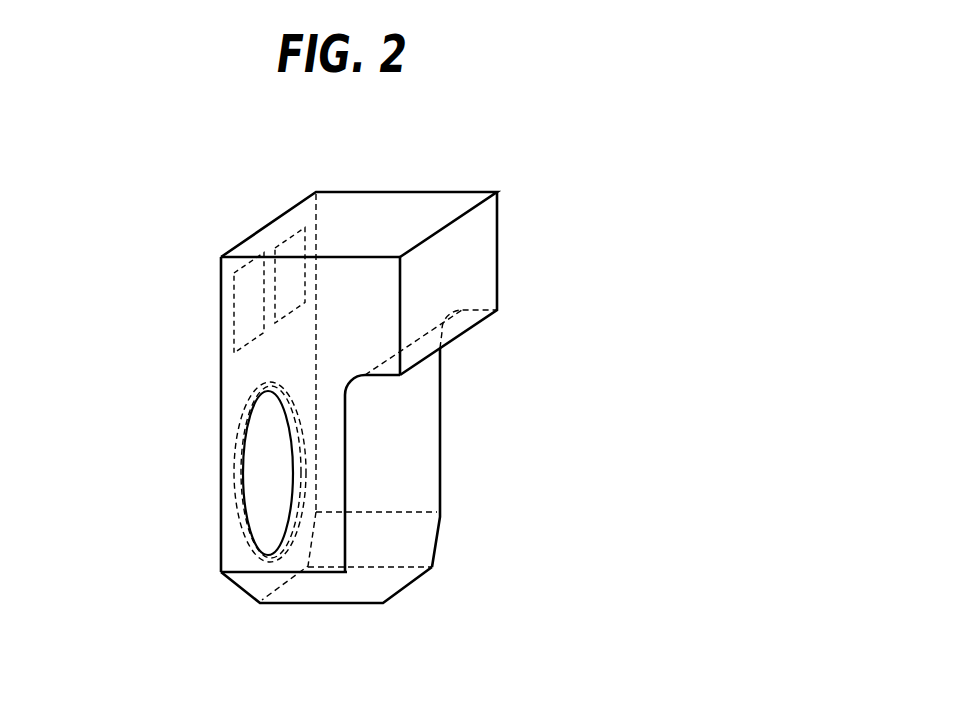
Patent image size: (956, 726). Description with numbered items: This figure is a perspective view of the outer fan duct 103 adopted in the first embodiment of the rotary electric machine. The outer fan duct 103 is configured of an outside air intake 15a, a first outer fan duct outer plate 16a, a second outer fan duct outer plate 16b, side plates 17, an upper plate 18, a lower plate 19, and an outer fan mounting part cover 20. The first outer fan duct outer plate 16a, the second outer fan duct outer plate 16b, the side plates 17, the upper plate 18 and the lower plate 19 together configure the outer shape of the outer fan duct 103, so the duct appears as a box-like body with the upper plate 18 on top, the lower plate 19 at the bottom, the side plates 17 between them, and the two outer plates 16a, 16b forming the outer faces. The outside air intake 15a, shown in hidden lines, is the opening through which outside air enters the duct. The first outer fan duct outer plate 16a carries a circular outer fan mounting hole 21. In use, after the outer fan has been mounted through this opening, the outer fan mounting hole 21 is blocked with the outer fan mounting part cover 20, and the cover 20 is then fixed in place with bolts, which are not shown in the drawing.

The outer fan duct 103 is at (509, 242).
The outside air intake 15a is at (247, 282).
The first outer fan duct outer plate 16a is at (240, 387).
The second outer fan duct outer plate 16b is at (418, 448).
The side plates 17 is at (302, 333).
The upper plate 18 is at (427, 212).
The lower plate 19 is at (387, 578).
The outer fan mounting part cover 20 is at (237, 458).
The outer fan mounting hole 21 is at (267, 475).